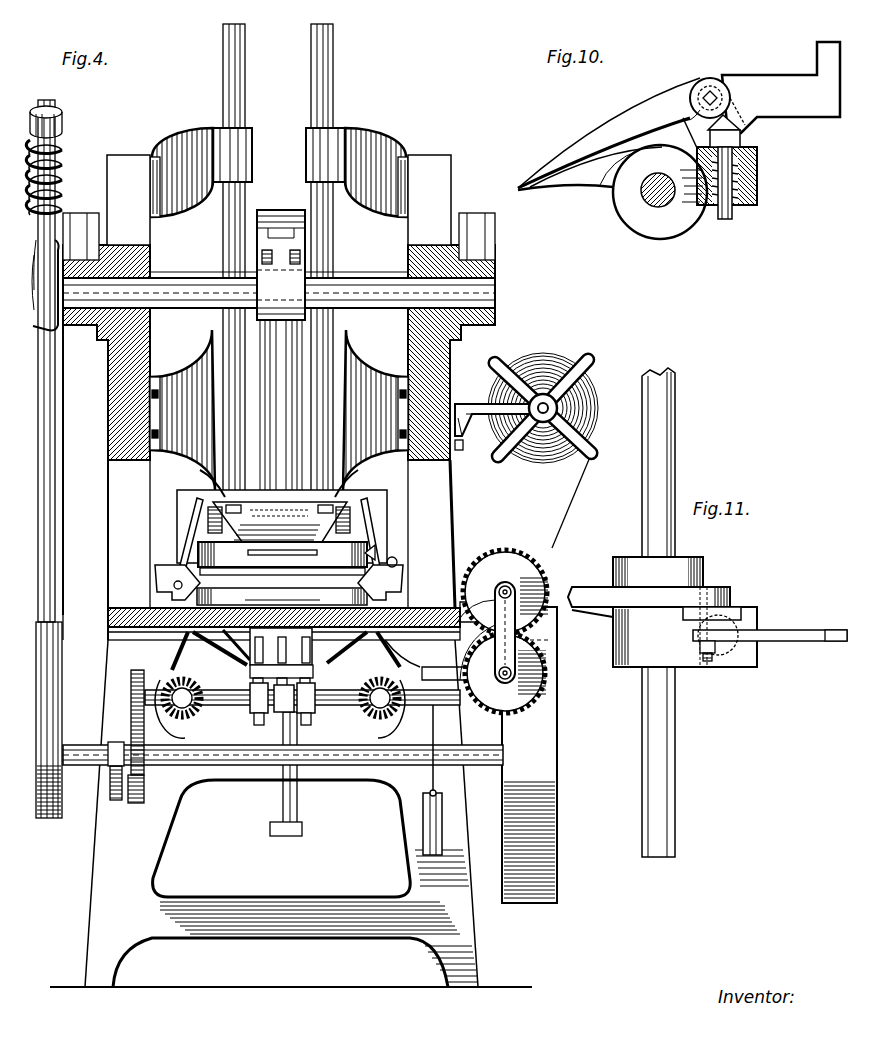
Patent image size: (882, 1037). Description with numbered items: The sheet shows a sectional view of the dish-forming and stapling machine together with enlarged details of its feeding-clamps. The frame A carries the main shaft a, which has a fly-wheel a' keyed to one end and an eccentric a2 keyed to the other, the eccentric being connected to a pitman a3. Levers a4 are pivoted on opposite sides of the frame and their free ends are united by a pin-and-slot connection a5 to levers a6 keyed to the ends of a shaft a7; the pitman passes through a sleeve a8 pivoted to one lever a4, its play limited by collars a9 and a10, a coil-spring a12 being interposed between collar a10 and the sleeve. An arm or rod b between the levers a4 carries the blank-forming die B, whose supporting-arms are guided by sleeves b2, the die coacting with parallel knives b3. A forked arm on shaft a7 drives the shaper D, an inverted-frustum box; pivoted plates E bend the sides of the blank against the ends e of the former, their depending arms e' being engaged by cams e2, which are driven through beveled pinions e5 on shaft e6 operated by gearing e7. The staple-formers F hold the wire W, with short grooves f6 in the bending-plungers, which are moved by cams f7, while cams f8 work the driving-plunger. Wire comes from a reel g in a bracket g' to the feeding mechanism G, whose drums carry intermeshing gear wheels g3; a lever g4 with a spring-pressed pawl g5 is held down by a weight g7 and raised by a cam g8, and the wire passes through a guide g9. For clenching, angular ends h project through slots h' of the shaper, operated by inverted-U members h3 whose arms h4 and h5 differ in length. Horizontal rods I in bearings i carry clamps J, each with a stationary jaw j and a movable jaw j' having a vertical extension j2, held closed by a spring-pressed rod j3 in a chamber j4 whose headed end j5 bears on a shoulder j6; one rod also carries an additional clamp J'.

In FIG. 4, the frame A is at (456, 518).
In FIG. 4, the fly-wheel a' is at (408, 463).
In FIG. 4, the eccentric a2 is at (306, 152).
In FIG. 4, the rod or pitman a3 is at (57, 521).
In FIG. 4, the levers a4 is at (92, 213).
In FIG. 4, the pin-and-slot connection a5 is at (80, 227).
In FIG. 4, the levers a6 is at (511, 236).
In FIG. 4, the shaft a7 is at (189, 300).
In FIG. 4, the sleeve a8 is at (230, 652).
In FIG. 4, the collar a9 is at (50, 328).
In FIG. 4, the collar a10 is at (63, 126).
In FIG. 4, the coil-spring a12 is at (63, 160).
In FIG. 4, the main shaft a is at (283, 507).
In FIG. 4, the arm or rod b is at (362, 277).
In FIG. 4, the sleeves b2 is at (212, 382).
In FIG. 4, the parallel knives b3 is at (320, 590).
In FIG. 4, the angular ends h is at (279, 501).
In FIG. 4, the slots h' is at (282, 560).
In FIG. 4, the inverted-U-shape members h3 is at (187, 492).
In FIG. 4, the arms h4 is at (200, 470).
In FIG. 4, the arms h5 is at (183, 527).
In FIG. 4, the shaper D is at (280, 519).
In FIG. 4, the ends of the former e is at (284, 520).
In FIG. 4, the depending arms e' is at (284, 650).
In FIG. 4, the cams e2 is at (176, 722).
In FIG. 4, the beveled pinions e5 is at (162, 680).
In FIG. 4, the shaft e6 is at (333, 706).
In FIG. 4, the gearing e7 is at (130, 700).
In FIG. 4, the blank-forming die B is at (282, 554).
In FIG. 4, the horizontal rods I is at (195, 580).
In FIG. 10, the horizontal rods I is at (660, 207).
In FIG. 11, the horizontal rods I is at (676, 426).
In FIG. 4, the clamp J is at (278, 582).
In FIG. 10, the clamp J is at (609, 134).
In FIG. 4, the additional clamp J' is at (399, 553).
In FIG. 4, the bearings i is at (176, 590).
In FIG. 4, the pivoted plates E is at (296, 652).
In FIG. 4, the staple-formers F is at (281, 658).
In FIG. 4, the short grooves f6 is at (548, 640).
In FIG. 4, the cams f7 is at (252, 715).
In FIG. 4, the cams f8 is at (284, 728).
In FIG. 4, the reel g is at (556, 402).
In FIG. 4, the bracket g' is at (496, 413).
In FIG. 4, the gear wheel or pinion g3 is at (480, 631).
In FIG. 4, the arm or lever g4 is at (475, 700).
In FIG. 4, the spring-pressed pawl g5 is at (494, 634).
In FIG. 4, the weight g7 is at (423, 823).
In FIG. 4, the cam g8 is at (430, 745).
In FIG. 4, the pipe or guide g9 is at (390, 650).
In FIG. 4, the feeding mechanism G is at (505, 577).
In FIG. 4, the wire W is at (568, 503).
In FIG. 10, the lower stationary jaw j is at (614, 184).
In FIG. 11, the lower stationary jaw j is at (662, 605).
In FIG. 10, the movable jaw j' is at (596, 144).
In FIG. 11, the movable jaw j' is at (687, 561).
In FIG. 10, the vertical extension j2 is at (788, 75).
In FIG. 11, the vertical extension j2 is at (790, 642).
In FIG. 10, the spring-pressed rod j3 is at (742, 137).
In FIG. 10, the chamber j4 is at (758, 185).
In FIG. 10, the headed end j5 is at (690, 117).
In FIG. 11, the headed end j5 is at (725, 655).
In FIG. 10, the shoulder j6 is at (740, 112).